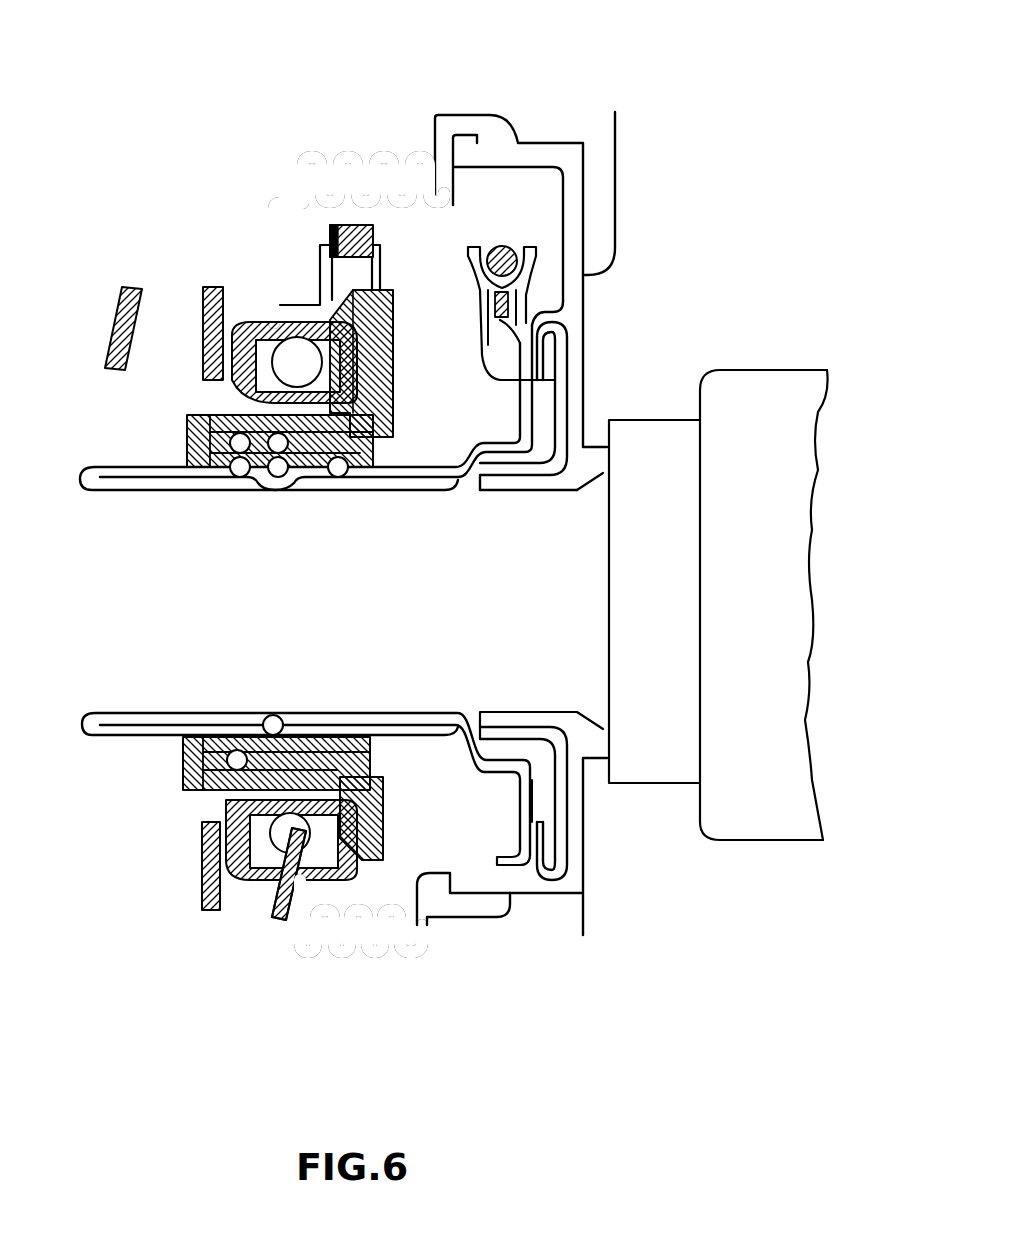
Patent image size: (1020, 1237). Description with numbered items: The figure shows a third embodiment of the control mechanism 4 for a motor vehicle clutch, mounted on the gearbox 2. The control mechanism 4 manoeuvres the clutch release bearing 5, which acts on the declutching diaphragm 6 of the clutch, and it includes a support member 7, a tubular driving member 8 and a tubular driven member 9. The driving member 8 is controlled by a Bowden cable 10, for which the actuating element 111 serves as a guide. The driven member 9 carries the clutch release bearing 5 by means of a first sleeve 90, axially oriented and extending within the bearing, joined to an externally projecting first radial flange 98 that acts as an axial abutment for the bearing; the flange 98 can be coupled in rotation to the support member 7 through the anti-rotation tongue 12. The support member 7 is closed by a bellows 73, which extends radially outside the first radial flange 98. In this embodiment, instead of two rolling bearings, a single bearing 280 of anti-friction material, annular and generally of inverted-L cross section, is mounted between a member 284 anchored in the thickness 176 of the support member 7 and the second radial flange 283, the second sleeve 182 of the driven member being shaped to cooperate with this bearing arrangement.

The gearbox 2 is at (638, 853).
The control mechanism 4 is at (461, 92).
The clutch release bearing 5 is at (251, 300).
The diaphragm 6 is at (198, 866).
The support member 7 is at (531, 137).
The tubular driving member 8 is at (108, 466).
The tubular driven member 9 is at (372, 876).
The Bowden cable 10 is at (507, 248).
The anti-rotation means 12 is at (334, 234).
The bellows 73 is at (358, 150).
The first sleeve 90 is at (247, 790).
The first radial flange 98 is at (385, 830).
The actuating element 111 is at (520, 283).
The thickness of the support member 176 is at (548, 894).
The second sleeve 182 is at (93, 735).
The bearing 280 is at (545, 780).
The second radial flange 283 is at (520, 807).
The member 284 is at (565, 355).